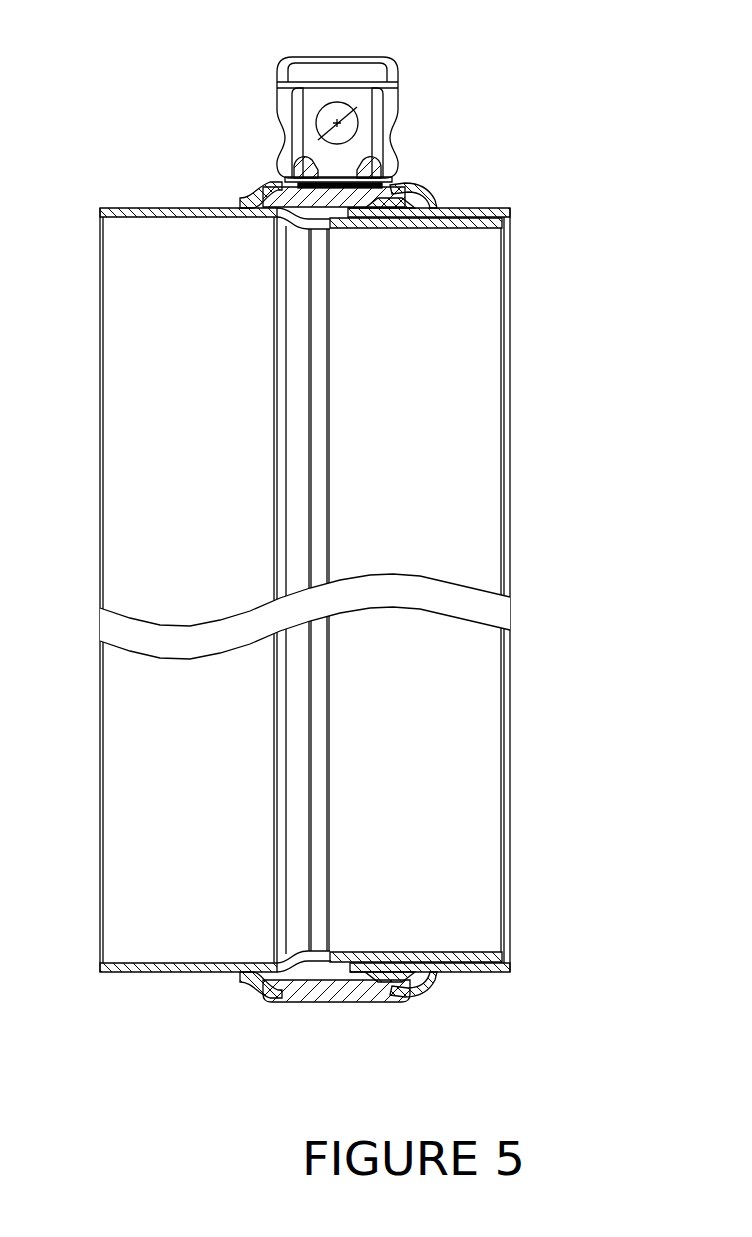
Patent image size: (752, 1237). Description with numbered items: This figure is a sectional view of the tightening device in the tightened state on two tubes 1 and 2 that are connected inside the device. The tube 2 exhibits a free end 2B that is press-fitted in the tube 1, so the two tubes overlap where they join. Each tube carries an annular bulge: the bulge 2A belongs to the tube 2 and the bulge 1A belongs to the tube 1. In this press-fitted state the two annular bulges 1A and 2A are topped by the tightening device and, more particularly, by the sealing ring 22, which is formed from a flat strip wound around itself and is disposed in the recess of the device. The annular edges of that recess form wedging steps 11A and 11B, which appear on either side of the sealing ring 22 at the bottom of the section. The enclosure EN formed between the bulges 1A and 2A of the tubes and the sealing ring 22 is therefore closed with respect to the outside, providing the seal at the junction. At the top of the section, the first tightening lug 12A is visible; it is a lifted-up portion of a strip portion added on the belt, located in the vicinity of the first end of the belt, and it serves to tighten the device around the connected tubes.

The tube 1 is at (482, 207).
The annular bulge 1A is at (410, 182).
The tube 2 is at (118, 528).
The annular bulge 2A is at (265, 190).
The free end 2B is at (487, 228).
The first tightening lug 12A is at (303, 70).
The enclosure EN is at (337, 212).
The sealing ring 22 is at (345, 988).
The wedging step 11A is at (398, 988).
The wedging step 11B is at (283, 993).